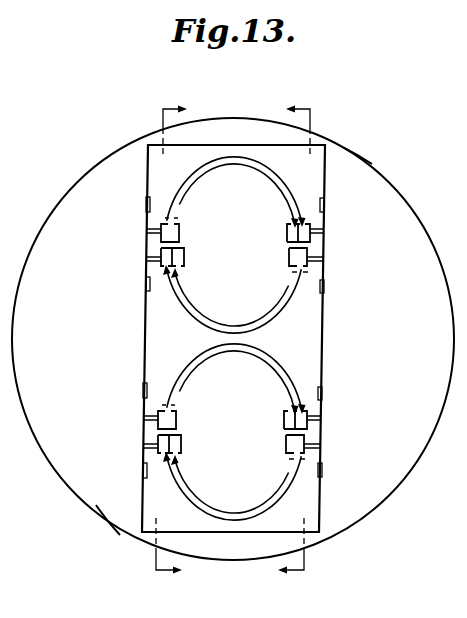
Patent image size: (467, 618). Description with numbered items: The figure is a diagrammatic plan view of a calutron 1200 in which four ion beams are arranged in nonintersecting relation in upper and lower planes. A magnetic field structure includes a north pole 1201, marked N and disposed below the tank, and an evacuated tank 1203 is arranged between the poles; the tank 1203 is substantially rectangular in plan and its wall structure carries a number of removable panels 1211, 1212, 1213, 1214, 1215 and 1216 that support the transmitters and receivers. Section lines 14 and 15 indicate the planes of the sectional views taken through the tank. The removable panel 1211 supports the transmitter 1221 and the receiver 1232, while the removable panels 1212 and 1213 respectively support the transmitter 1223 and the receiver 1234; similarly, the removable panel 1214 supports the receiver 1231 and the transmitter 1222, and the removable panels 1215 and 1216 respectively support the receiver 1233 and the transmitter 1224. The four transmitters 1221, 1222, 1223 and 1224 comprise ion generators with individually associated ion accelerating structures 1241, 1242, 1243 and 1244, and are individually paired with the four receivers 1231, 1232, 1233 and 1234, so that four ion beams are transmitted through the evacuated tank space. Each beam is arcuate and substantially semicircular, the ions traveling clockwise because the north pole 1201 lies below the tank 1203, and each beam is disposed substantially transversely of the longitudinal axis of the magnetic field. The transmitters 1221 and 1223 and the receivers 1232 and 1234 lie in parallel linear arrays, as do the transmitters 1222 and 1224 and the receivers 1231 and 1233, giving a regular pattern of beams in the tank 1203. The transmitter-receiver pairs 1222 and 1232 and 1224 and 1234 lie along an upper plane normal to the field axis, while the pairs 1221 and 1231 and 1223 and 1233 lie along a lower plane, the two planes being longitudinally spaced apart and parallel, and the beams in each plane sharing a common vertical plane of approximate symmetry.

The section line 14- 14 is at (170, 341).
The section line 15- 15 is at (296, 341).
The north pole designation N is at (106, 518).
The calutron 1200 is at (258, 105).
The north pole 1201 is at (120, 163).
The evacuated tank 1203 is at (330, 157).
The removable panel 1211 is at (148, 237).
The removable panel 1212 is at (156, 414).
The removable panel 1213 is at (142, 459).
The removable panel 1214 is at (323, 236).
The removable panel 1215 is at (320, 423).
The removable panel 1216 is at (320, 461).
The transmitter 1221 is at (157, 227).
The transmitter 1222 is at (312, 264).
The transmitter 1223 is at (153, 432).
The transmitter 1224 is at (308, 447).
The receiver 1231 is at (311, 226).
The receiver 1232 is at (159, 268).
The receiver 1233 is at (308, 415).
The receiver 1234 is at (157, 449).
The ion accelerating structure 1241 is at (167, 220).
The ion accelerating structure 1242 is at (305, 272).
The ion accelerating structure 1243 is at (163, 410).
The ion accelerating structure 1244 is at (305, 461).